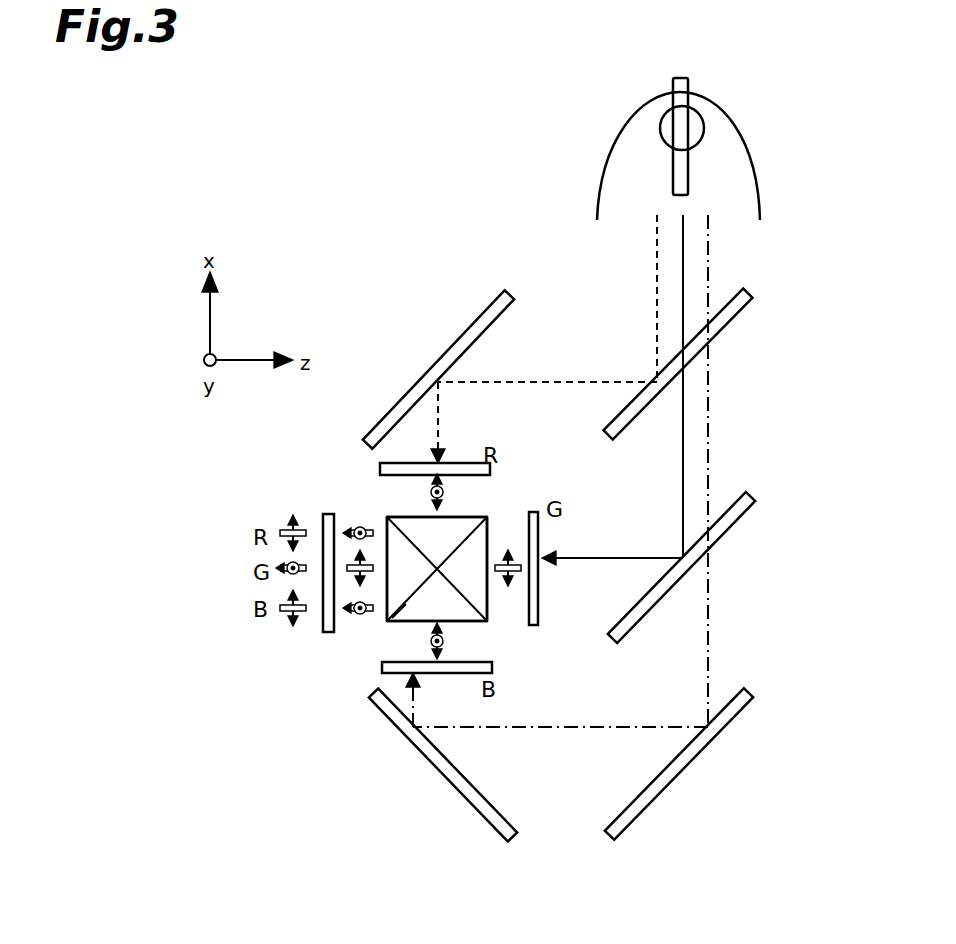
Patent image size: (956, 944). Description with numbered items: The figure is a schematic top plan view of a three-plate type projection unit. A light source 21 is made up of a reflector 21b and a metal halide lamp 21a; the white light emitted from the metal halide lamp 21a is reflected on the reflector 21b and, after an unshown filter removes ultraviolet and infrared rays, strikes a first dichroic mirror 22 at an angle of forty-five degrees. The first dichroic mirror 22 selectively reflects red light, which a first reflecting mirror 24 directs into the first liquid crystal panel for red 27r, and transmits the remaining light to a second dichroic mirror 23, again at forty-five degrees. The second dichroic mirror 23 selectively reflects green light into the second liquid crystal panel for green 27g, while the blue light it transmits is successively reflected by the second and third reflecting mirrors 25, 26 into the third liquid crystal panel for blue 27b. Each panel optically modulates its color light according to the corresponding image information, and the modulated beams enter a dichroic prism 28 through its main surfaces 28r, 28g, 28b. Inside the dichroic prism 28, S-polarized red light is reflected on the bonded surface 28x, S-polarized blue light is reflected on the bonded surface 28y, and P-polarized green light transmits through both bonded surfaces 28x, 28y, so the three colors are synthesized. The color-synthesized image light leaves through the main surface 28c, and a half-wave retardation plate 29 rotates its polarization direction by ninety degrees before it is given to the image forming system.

The light source 21 is at (722, 92).
The metal halide lamp 21a is at (703, 127).
The reflector 21b is at (617, 145).
The first dichroic mirror 22 is at (720, 328).
The second dichroic mirror 23 is at (727, 523).
The first reflecting mirror 24 is at (477, 325).
The second reflecting mirror 25 is at (697, 752).
The third reflecting mirror 26 is at (460, 785).
The first liquid crystal panel for red 27r is at (455, 465).
The second liquid crystal panel for green 27g is at (535, 607).
The third liquid crystal panel for blue 27b is at (462, 675).
The dichroic prism 28 is at (396, 507).
The main surface 28c is at (385, 517).
The main surface 28r is at (468, 514).
The main surface 28g is at (488, 545).
The main surface 28b is at (472, 622).
The bonded surface 28x is at (392, 620).
The bonded surface 28y is at (447, 583).
The λ/2 retardation plate 29 is at (320, 513).